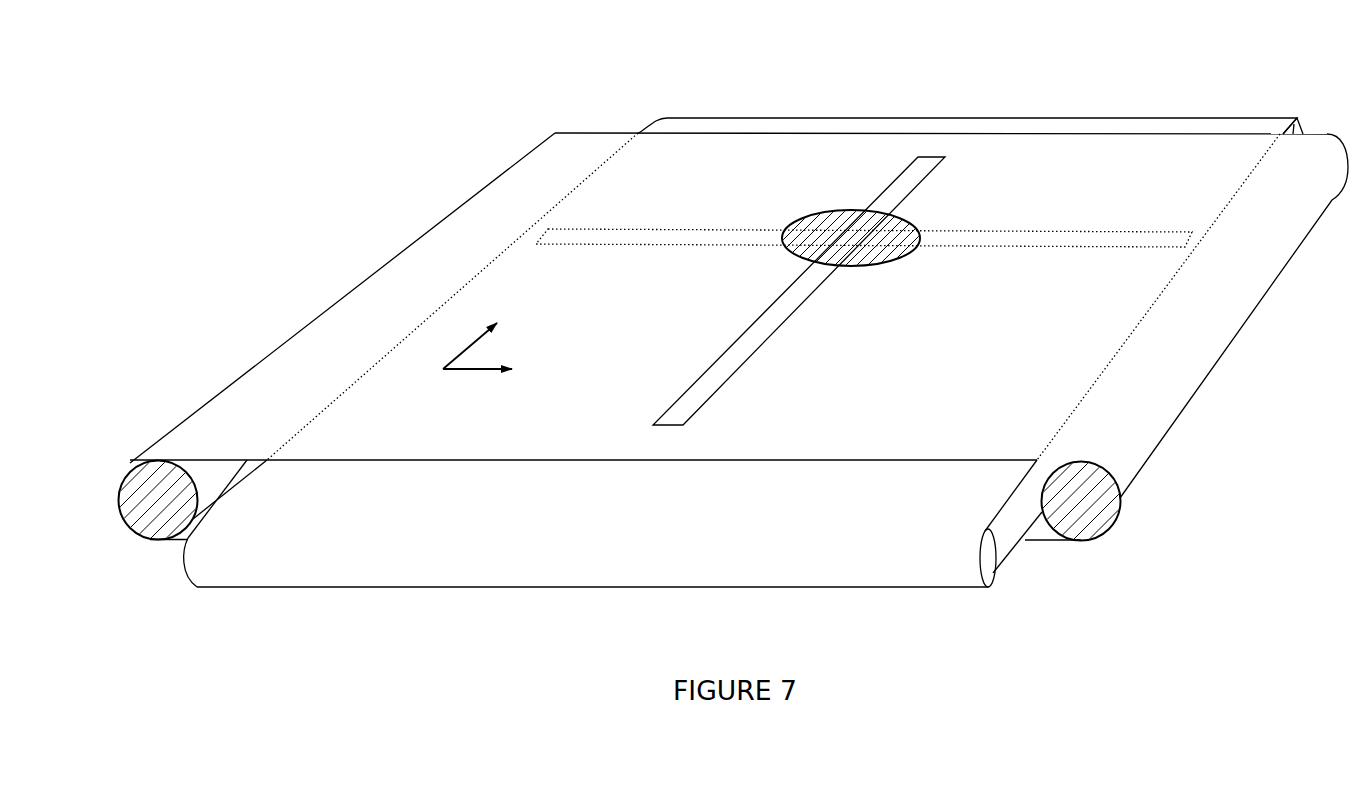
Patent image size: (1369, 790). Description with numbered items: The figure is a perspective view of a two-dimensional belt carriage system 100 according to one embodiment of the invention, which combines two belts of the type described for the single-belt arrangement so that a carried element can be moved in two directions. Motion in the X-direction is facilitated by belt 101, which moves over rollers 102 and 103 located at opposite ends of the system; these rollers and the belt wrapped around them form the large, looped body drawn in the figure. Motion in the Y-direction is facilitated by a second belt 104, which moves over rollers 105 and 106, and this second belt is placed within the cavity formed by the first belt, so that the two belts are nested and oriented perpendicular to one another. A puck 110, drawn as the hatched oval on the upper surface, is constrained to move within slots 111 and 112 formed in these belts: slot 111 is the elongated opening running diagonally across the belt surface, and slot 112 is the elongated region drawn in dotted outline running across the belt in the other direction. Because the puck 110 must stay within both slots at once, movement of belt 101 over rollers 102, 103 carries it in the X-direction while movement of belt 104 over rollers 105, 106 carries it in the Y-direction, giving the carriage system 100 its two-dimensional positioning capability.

The two-dimensional belt carriage system 100 is at (705, 352).
The belt 101 is at (252, 398).
The roller 102 is at (128, 513).
The roller 103 is at (1100, 503).
The belt 104 is at (1117, 125).
The roller 105 is at (1303, 127).
The roller 106 is at (990, 560).
The puck 110 is at (828, 224).
The slot 111 is at (718, 370).
The slot 112 is at (1037, 242).